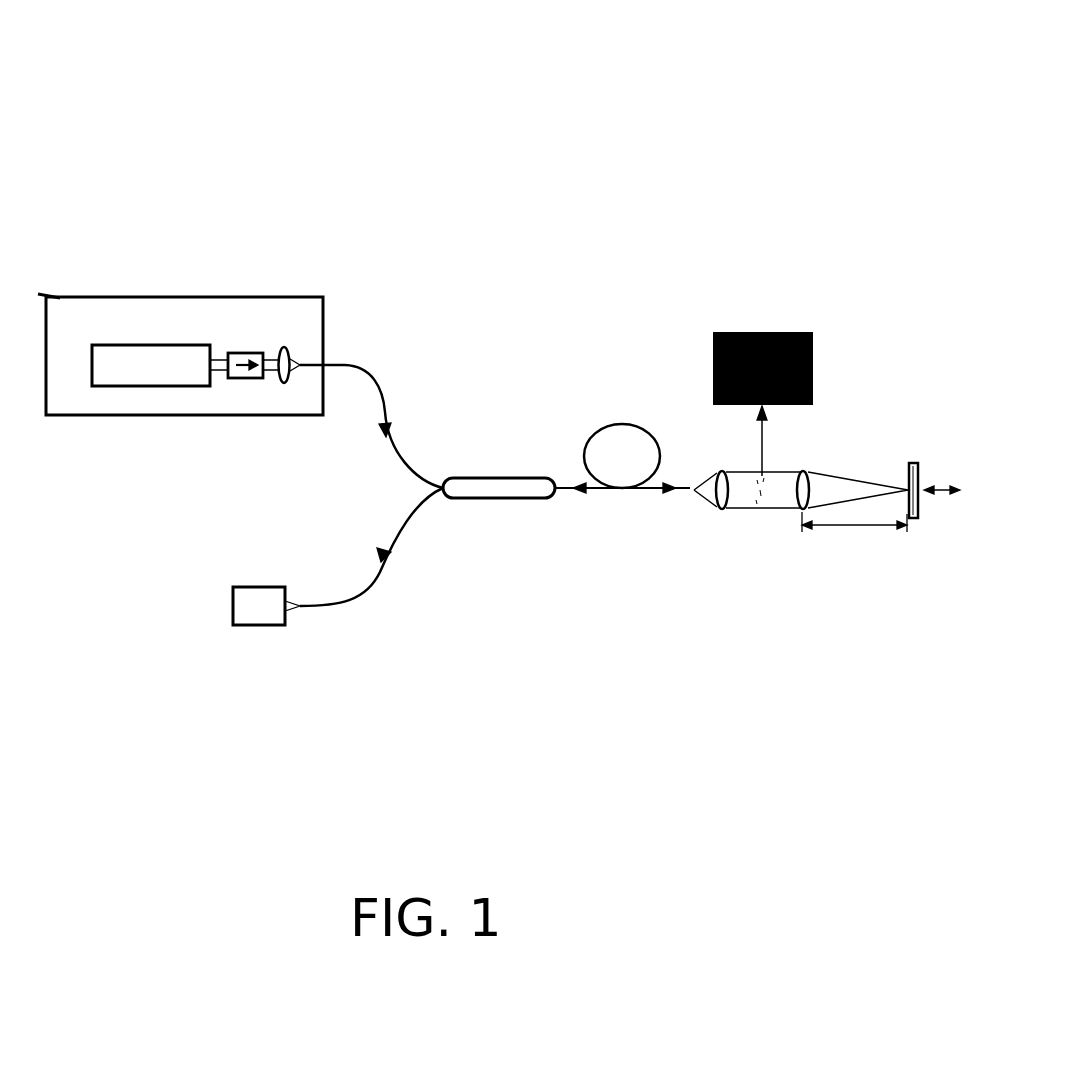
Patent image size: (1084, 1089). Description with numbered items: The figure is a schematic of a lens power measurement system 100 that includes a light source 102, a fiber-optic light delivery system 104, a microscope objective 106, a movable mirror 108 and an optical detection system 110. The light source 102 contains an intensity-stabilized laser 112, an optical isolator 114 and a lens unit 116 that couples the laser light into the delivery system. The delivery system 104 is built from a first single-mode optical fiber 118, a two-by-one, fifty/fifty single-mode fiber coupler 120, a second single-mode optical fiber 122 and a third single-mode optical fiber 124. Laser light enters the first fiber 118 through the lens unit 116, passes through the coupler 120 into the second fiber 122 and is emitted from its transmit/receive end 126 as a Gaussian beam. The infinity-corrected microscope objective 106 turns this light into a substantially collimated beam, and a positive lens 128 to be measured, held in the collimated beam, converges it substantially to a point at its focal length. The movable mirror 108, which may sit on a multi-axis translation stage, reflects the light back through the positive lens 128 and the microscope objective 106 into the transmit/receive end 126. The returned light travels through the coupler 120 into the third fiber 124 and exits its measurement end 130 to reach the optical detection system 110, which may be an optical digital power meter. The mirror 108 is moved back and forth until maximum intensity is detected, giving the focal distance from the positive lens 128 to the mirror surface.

The lens power measurement system 100 is at (602, 105).
The light source 102 is at (148, 297).
The fiber-optic light delivery system 104 is at (545, 640).
The microscope objective 106 is at (723, 510).
The movable mirror 108 is at (913, 520).
The optical detection system 110 is at (237, 628).
The laser 112 is at (102, 387).
The optical isolator 114 is at (238, 380).
The lens unit 116 is at (285, 385).
The first single-mode optical fiber 118 is at (343, 367).
The single-mode fiber coupler 120 is at (481, 500).
The second single-mode optical fiber 122 is at (590, 491).
The third single-mode optical fiber 124 is at (374, 585).
The transmit/receive end 126 is at (695, 491).
The positive lens 128 is at (799, 512).
The measurement end 130 is at (298, 609).